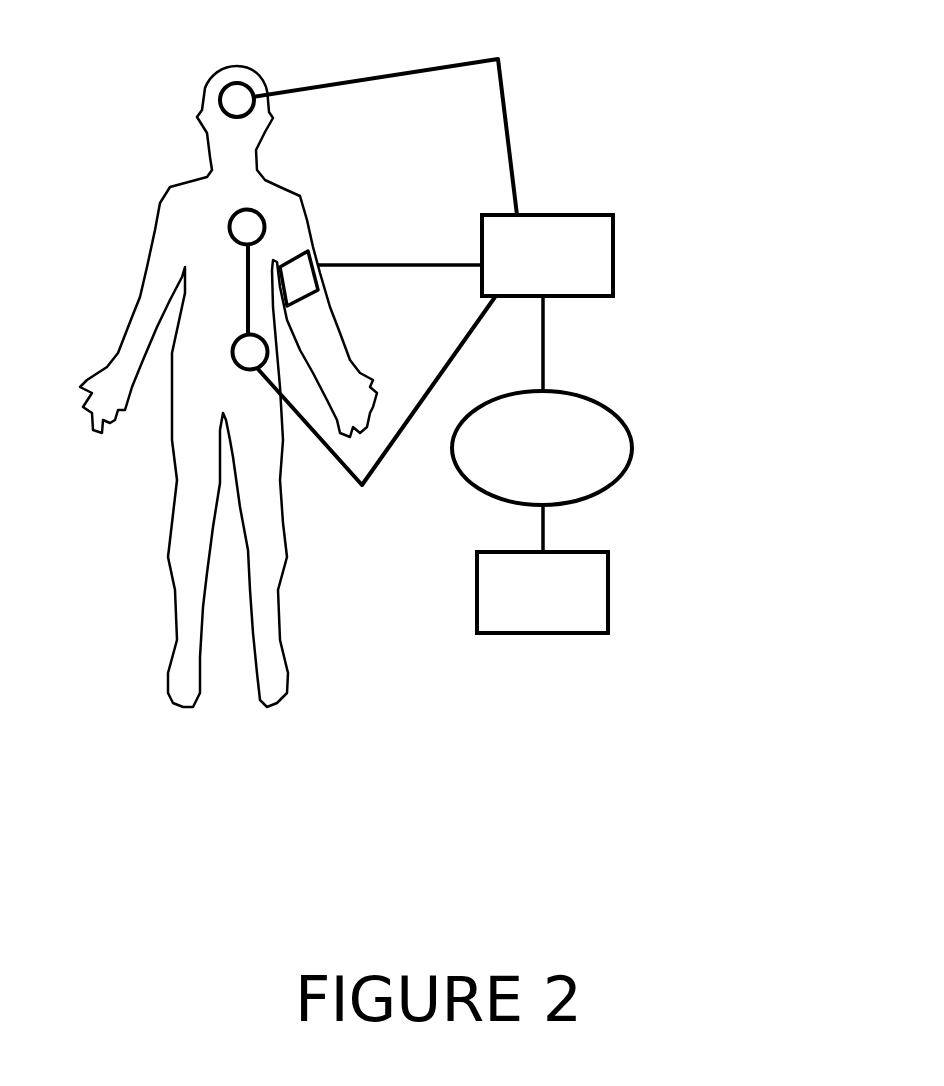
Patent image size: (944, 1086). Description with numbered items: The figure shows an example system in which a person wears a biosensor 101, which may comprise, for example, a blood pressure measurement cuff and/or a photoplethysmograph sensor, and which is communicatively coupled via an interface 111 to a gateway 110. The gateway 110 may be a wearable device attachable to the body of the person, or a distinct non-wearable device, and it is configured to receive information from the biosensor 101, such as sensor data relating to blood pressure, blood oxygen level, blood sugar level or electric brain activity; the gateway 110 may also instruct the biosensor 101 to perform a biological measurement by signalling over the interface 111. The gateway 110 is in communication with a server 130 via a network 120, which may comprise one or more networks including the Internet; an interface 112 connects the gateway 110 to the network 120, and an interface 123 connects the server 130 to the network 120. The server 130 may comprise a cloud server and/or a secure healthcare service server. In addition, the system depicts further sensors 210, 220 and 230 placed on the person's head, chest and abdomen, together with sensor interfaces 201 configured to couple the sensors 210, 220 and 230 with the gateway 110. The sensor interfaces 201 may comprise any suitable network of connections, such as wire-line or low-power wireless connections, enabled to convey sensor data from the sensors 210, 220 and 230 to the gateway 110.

The biosensor 101 is at (307, 233).
The gateway 110 is at (547, 255).
The interface 111 is at (398, 263).
The interface 112 is at (543, 357).
The network 120 is at (542, 448).
The interface 123 is at (545, 528).
The server 130 is at (542, 592).
The sensor interfaces 201 is at (510, 123).
The sensor 210 is at (233, 100).
The sensor 220 is at (242, 223).
The sensor 230 is at (248, 358).